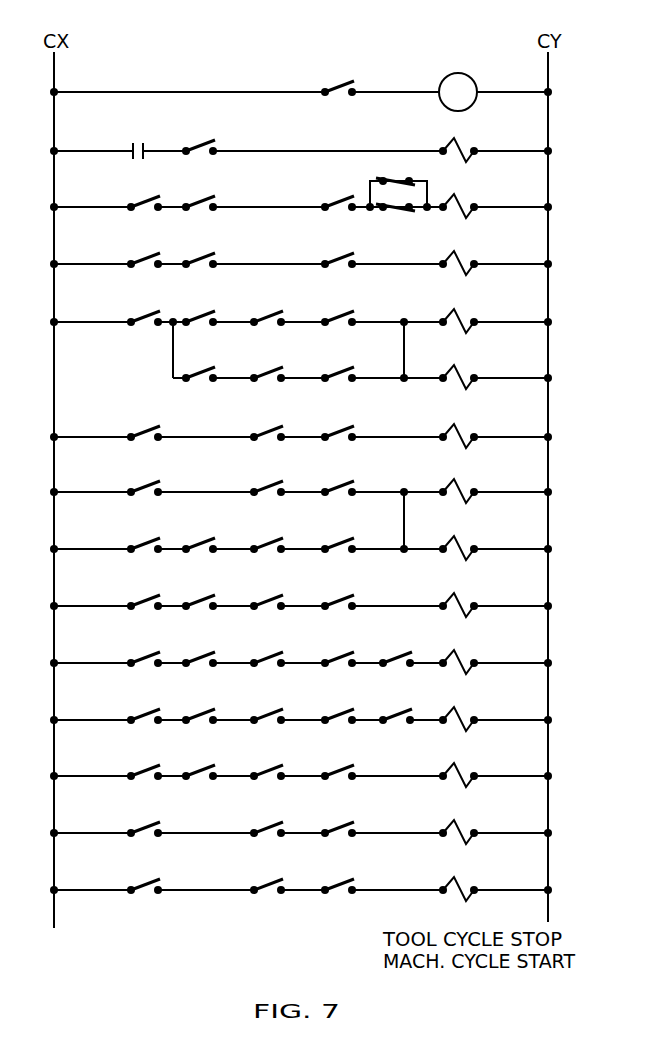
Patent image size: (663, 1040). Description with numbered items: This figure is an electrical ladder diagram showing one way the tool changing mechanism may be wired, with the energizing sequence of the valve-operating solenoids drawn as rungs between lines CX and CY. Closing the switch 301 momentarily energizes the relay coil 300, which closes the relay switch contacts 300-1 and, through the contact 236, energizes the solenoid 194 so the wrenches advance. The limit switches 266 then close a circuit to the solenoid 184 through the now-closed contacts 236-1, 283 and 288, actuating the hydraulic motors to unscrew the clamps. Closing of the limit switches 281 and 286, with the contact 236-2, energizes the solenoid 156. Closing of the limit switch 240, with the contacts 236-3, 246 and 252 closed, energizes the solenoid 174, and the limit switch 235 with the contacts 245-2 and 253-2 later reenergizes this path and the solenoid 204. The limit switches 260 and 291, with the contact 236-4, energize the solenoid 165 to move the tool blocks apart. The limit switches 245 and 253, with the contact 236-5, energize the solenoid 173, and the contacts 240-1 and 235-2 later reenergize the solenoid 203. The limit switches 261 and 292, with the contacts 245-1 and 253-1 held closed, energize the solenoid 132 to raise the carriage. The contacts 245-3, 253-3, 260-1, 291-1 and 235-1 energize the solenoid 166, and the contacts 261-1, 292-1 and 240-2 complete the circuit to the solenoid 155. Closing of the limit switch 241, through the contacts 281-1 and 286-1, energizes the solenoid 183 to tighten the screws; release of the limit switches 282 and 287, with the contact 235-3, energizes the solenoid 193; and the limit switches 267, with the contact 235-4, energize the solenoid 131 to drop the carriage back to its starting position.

The switch 301 is at (342, 86).
The relay coil 300 is at (468, 78).
The relay switch contacts 300-1 is at (134, 142).
The limit switch 236 is at (215, 134).
The solenoid 194 is at (466, 148).
The limit switch 266 is at (149, 198).
The switch contact 236-1 is at (207, 197).
The limit switch 288 is at (398, 181).
The limit switch 283 is at (398, 213).
The solenoid 184 is at (466, 204).
The limit switch 281 is at (149, 255).
The switch contact 236-2 is at (207, 254).
The limit switch 286 is at (344, 256).
The solenoid 156 is at (466, 261).
The limit switch 240 is at (155, 313).
The switch contact 236-3 is at (207, 312).
The limit switch 246 is at (276, 310).
The limit switch 252 is at (344, 312).
The solenoid 174 is at (466, 319).
The limit switch 235 is at (204, 361).
The switch contact 245-2 is at (272, 364).
The switch contact 253-2 is at (339, 372).
The solenoid 204 is at (466, 375).
The limit switch 260 is at (154, 425).
The switch contact 236-4 is at (270, 427).
The limit switch 291 is at (344, 425).
The solenoid 165 is at (466, 432).
The limit switch 245 is at (150, 482).
The switch contact 236-5 is at (270, 486).
The limit switch 253 is at (342, 482).
The solenoid 173 is at (466, 487).
The switch contact 240-1 is at (268, 541).
The switch contact 235-2 is at (340, 541).
The solenoid 203 is at (466, 544).
The limit switch 261 is at (152, 595).
The switch contact 245-1 is at (203, 600).
The switch contact 253-1 is at (279, 600).
The limit switch 292 is at (352, 598).
The solenoid 132 is at (466, 601).
The switch contact 245-3 is at (149, 650).
The switch contact 253-3 is at (200, 651).
The switch contact 260-1 is at (272, 651).
The switch contact 291-1 is at (338, 651).
The switch contact 235-1 is at (400, 651).
The solenoid 166 is at (466, 658).
The switch contact 261-1 is at (196, 714).
The switch contact 292-1 is at (270, 714).
The switch contact 240-2 is at (398, 712).
The solenoid 155 is at (466, 715).
The limit switch 241 is at (150, 770).
The switch contact 281-1 is at (268, 769).
The switch contact 286-1 is at (342, 770).
The solenoid 183 is at (466, 772).
The limit switch 282 is at (156, 818).
The switch contact 235-3 is at (268, 824).
The limit switch 287 is at (344, 820).
The solenoid 193 is at (466, 829).
The limit switch 267 is at (156, 875).
The switch contact 235-4 is at (278, 870).
The solenoid 131 is at (466, 886).